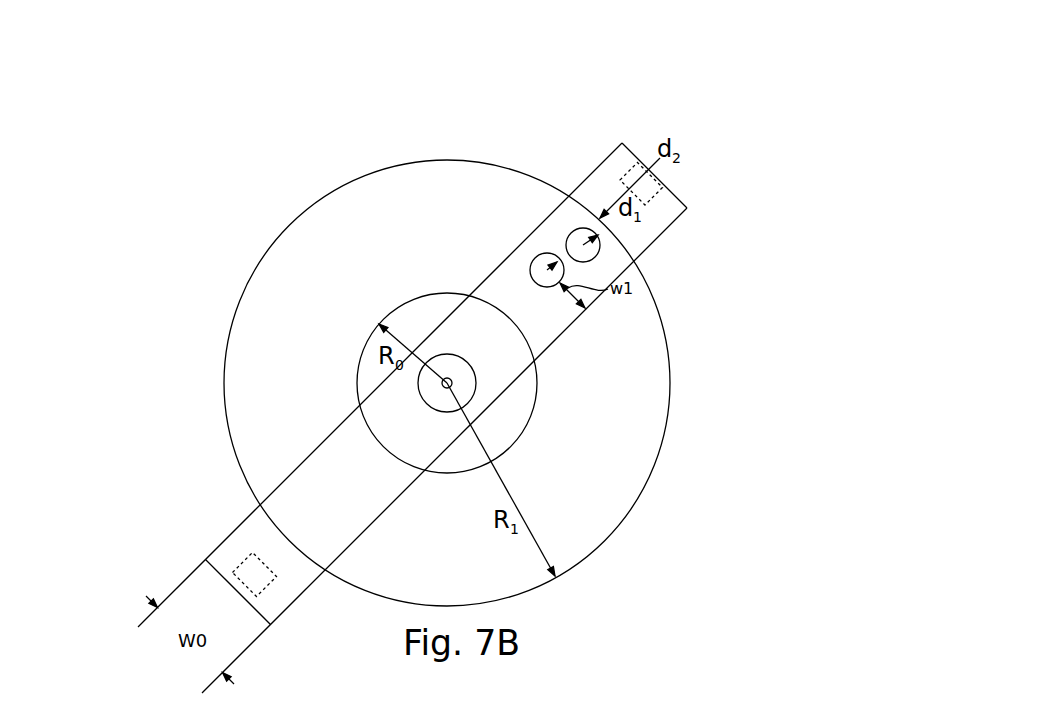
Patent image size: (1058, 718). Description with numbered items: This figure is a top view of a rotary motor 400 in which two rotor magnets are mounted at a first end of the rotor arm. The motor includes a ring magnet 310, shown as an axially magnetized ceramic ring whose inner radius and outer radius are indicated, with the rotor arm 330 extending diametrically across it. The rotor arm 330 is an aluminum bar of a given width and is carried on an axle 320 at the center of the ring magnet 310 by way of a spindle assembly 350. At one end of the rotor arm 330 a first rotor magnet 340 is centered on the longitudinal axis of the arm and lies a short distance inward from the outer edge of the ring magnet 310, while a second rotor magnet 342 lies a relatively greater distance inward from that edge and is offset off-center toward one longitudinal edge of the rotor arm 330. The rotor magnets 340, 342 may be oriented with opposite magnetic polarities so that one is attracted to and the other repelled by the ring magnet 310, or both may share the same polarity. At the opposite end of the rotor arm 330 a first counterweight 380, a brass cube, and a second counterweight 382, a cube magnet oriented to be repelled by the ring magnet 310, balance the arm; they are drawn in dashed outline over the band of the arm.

The rotary motor 400 is at (758, 128).
The ring magnet 310 is at (672, 283).
The axle 320 is at (455, 373).
The rotor arm 330 is at (310, 520).
The first rotor magnet 340 is at (588, 229).
The second rotor magnet 342 is at (545, 253).
The spindle assembly 350 is at (438, 360).
The first counterweight 380 is at (625, 178).
The second counterweight 382 is at (235, 570).